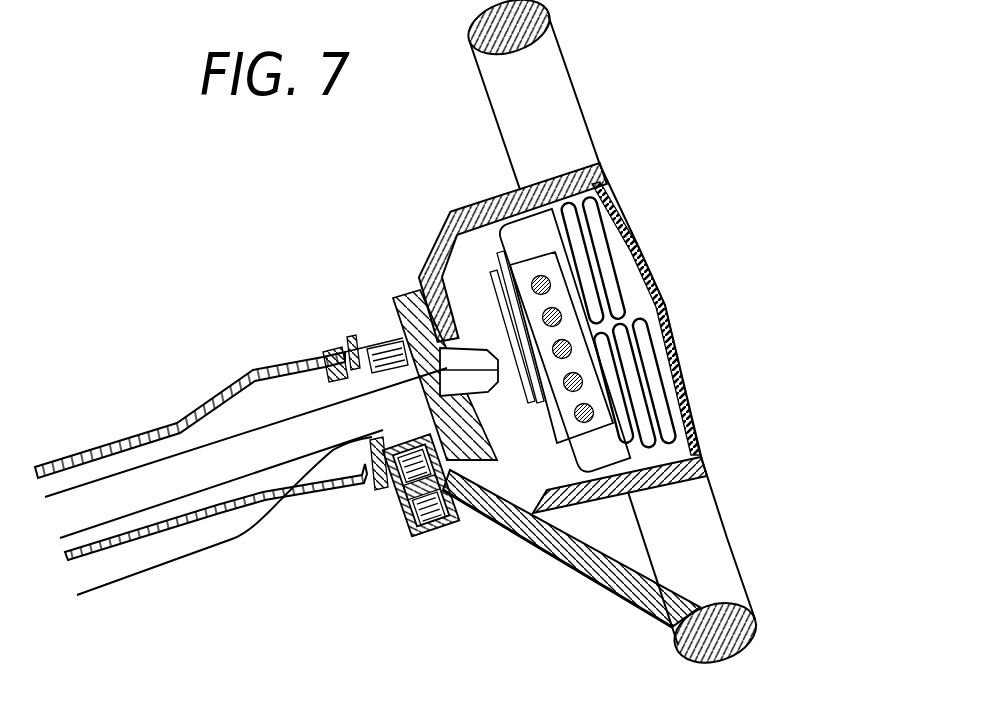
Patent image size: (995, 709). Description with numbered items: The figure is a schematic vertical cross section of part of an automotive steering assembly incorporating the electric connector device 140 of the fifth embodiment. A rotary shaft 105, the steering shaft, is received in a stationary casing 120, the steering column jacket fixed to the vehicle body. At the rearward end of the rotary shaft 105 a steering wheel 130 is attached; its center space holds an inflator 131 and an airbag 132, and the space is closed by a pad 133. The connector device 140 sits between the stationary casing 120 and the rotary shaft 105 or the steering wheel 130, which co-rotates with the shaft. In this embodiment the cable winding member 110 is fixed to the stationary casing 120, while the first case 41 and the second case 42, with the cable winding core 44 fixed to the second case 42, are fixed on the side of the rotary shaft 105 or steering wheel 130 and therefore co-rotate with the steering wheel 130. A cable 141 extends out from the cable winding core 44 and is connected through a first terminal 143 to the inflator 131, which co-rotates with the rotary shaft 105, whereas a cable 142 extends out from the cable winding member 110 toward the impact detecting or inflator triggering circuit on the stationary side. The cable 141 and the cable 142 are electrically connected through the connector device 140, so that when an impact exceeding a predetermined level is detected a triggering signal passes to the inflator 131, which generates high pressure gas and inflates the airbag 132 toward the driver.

The first case 41 is at (378, 338).
The second case 42 is at (440, 530).
The cable winding core 44 is at (398, 500).
The rotary shaft 105 is at (236, 447).
The cable winding member 110 is at (343, 347).
The stationary casing 120 is at (138, 430).
The steering wheel 130 is at (692, 657).
The inflator 131 is at (600, 487).
The airbag 132 is at (670, 397).
The pad 133 is at (673, 342).
The connector device 140 is at (386, 536).
The cable 141 is at (538, 472).
The cable 142 is at (222, 548).
The first terminal 143 is at (525, 378).